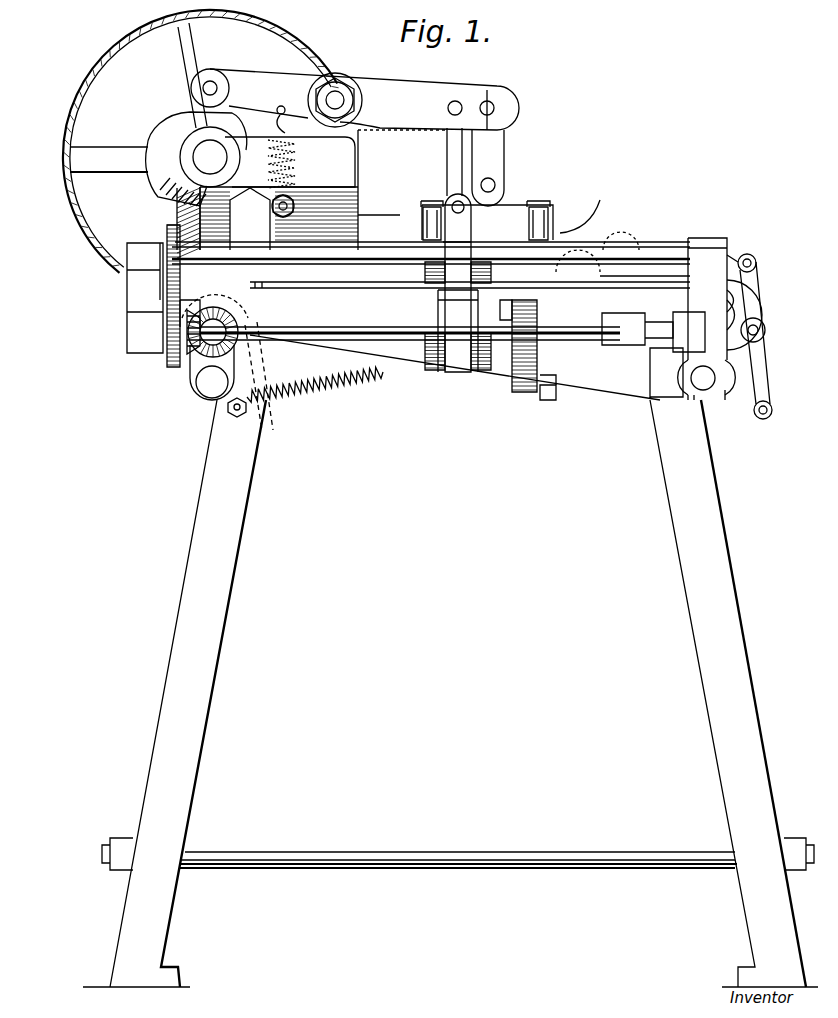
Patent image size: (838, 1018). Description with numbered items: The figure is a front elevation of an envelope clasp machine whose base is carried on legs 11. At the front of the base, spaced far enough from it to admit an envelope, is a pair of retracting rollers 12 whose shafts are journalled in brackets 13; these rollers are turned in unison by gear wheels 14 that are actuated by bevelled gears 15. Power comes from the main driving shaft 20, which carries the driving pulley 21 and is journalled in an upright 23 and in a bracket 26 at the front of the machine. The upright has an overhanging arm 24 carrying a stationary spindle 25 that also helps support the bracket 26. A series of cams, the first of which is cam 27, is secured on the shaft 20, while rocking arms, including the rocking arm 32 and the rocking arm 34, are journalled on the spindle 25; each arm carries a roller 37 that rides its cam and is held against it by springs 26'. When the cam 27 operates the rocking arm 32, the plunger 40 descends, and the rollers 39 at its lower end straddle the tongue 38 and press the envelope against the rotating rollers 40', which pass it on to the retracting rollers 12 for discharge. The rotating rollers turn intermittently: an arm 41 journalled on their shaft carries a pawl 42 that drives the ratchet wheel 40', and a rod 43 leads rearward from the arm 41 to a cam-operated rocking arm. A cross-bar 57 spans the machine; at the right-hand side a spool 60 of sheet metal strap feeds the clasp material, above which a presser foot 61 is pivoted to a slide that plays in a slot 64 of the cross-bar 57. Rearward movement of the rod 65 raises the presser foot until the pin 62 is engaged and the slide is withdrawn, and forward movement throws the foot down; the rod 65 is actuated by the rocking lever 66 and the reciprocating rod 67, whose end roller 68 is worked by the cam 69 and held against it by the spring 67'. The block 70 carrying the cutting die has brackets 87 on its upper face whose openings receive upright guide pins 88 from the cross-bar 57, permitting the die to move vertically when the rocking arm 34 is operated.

The legs 11 is at (190, 590).
The retracting rollers 12 is at (470, 228).
The brackets 13 is at (210, 390).
The gear wheels 14 is at (166, 241).
The bevelled gears 15 is at (192, 368).
The main driving shaft 20 is at (205, 155).
The driving pulley 21 is at (115, 48).
The upright 23 is at (356, 212).
The overhanging arm 24 is at (350, 224).
The spindle 25 is at (340, 92).
The bracket 26 is at (336, 190).
The springs 26' is at (303, 147).
The cam 27 is at (170, 240).
The rocking arm 32 is at (410, 120).
The rocking arm 34 is at (492, 92).
The roller 37 is at (212, 84).
The tongue 38 is at (440, 295).
The rollers 39 is at (428, 272).
The plunger 40 is at (438, 162).
The ratchet wheel 40' is at (506, 356).
The arm 41 is at (545, 352).
The pawl 42 is at (522, 396).
The rod 43 is at (543, 402).
The cross-bar 57 is at (312, 275).
The spool 60 is at (740, 300).
The presser foot 61 is at (576, 270).
The pin 62 is at (618, 252).
The slot 64 is at (552, 250).
The rod 65 is at (732, 262).
The rocking lever 66 is at (760, 352).
The reciprocating rod 67 is at (466, 379).
The spring 67' is at (315, 394).
The roller 68 is at (262, 325).
The cam 69 is at (166, 300).
The block 70 is at (563, 232).
The brackets 87 is at (395, 218).
The guide pins 88 is at (432, 206).